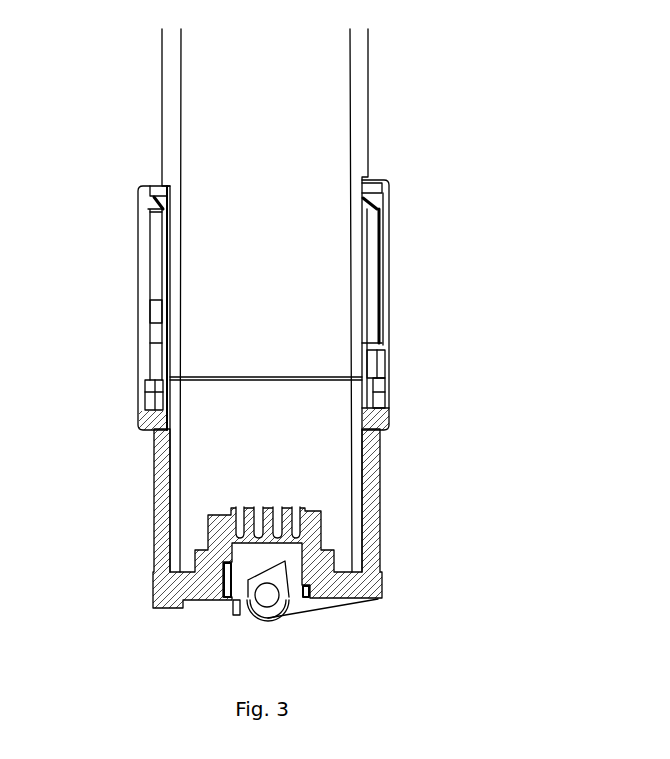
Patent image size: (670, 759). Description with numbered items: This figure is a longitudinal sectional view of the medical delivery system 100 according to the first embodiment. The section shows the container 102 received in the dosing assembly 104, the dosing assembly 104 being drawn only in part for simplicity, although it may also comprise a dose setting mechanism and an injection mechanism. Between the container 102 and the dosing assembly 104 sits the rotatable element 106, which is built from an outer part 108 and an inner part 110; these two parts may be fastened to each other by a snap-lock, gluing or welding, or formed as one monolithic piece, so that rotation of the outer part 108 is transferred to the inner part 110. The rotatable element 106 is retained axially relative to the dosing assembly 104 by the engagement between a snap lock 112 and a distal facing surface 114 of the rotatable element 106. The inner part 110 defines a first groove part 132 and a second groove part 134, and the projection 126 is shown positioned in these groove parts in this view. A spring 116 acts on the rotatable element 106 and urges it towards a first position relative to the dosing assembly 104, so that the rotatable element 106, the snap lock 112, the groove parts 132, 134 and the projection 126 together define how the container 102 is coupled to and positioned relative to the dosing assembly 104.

The medical delivery system 100 is at (552, 136).
The container 102 is at (364, 106).
The dosing assembly 104 is at (373, 500).
The rotatable element 106 is at (263, 305).
The outer part 108 is at (143, 198).
The inner part 110 is at (153, 270).
The snap lock 112 is at (157, 207).
The distal facing surface 114 is at (157, 212).
The spring 116 is at (160, 392).
The projection 126 is at (377, 335).
The first groove part 132 is at (378, 217).
The second groove part 134 is at (380, 350).